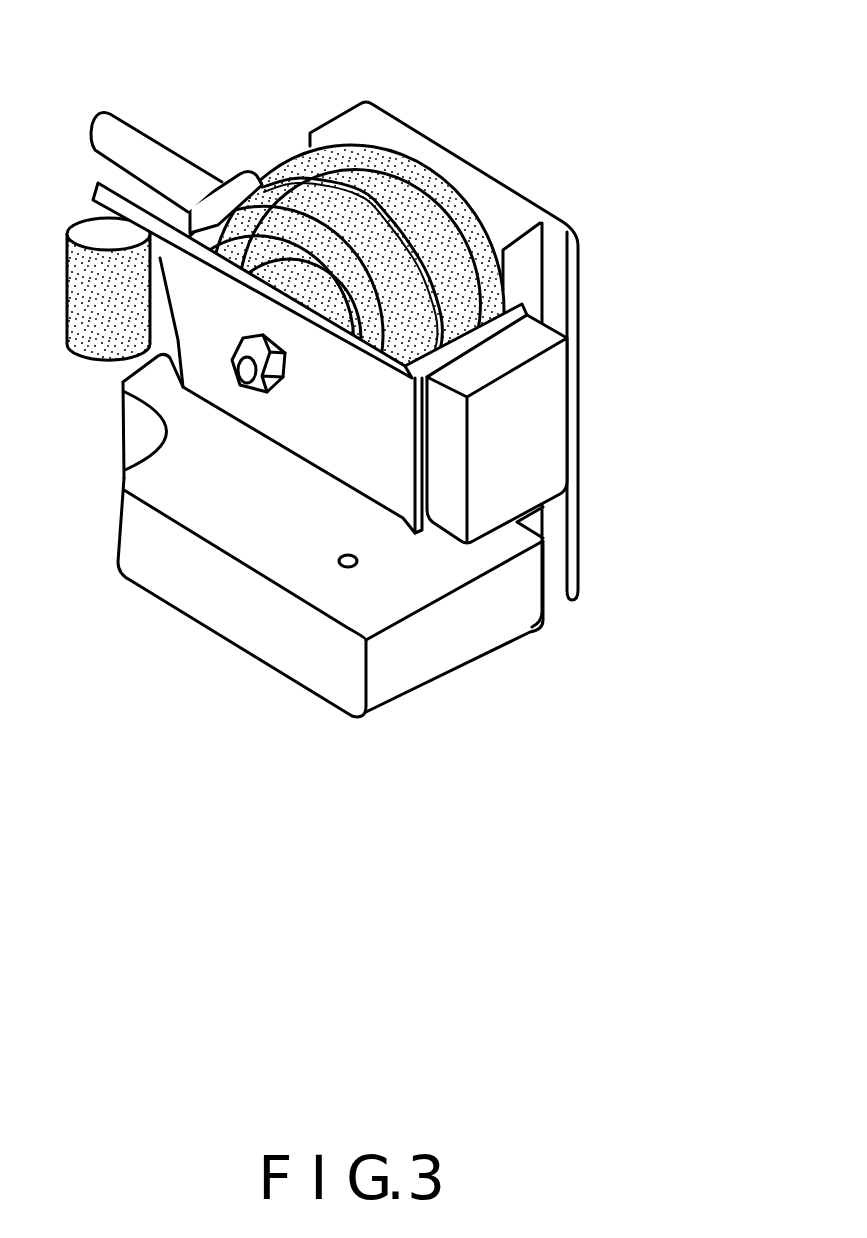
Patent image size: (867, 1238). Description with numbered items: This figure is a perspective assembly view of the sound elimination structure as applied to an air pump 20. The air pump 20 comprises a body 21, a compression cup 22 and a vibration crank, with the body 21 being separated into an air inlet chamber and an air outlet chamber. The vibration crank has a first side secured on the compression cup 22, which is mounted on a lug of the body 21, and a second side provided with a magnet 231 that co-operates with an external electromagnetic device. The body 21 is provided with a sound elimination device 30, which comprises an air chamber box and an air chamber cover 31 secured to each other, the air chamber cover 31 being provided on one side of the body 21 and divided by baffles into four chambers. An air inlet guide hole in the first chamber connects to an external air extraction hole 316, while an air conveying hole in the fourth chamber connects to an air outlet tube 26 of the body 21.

The air pump 20 is at (632, 185).
The body 21 is at (545, 286).
The compression cup 22 is at (387, 162).
The air outlet tube 26 is at (139, 148).
The sound elimination device 30 is at (528, 650).
The air chamber cover 31 is at (415, 677).
The magnet 231 is at (560, 437).
The external air extraction hole 316 is at (338, 562).